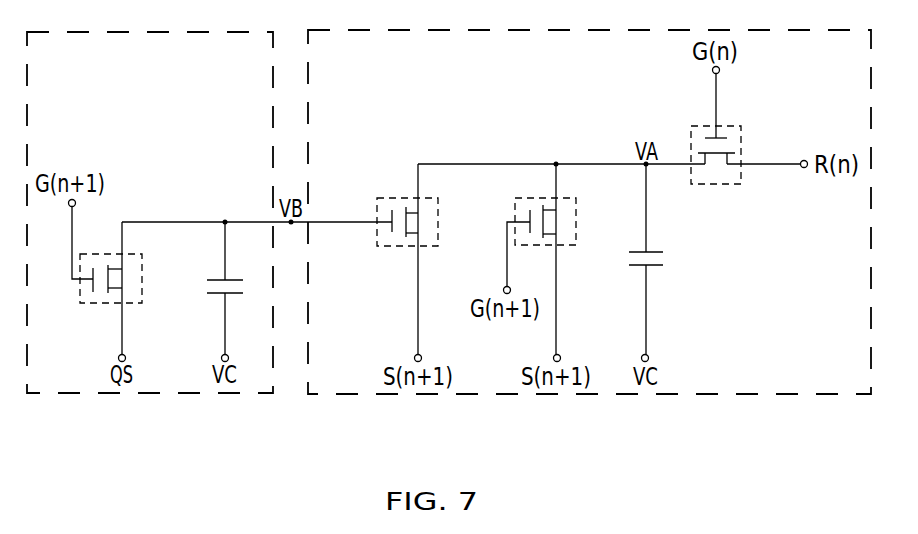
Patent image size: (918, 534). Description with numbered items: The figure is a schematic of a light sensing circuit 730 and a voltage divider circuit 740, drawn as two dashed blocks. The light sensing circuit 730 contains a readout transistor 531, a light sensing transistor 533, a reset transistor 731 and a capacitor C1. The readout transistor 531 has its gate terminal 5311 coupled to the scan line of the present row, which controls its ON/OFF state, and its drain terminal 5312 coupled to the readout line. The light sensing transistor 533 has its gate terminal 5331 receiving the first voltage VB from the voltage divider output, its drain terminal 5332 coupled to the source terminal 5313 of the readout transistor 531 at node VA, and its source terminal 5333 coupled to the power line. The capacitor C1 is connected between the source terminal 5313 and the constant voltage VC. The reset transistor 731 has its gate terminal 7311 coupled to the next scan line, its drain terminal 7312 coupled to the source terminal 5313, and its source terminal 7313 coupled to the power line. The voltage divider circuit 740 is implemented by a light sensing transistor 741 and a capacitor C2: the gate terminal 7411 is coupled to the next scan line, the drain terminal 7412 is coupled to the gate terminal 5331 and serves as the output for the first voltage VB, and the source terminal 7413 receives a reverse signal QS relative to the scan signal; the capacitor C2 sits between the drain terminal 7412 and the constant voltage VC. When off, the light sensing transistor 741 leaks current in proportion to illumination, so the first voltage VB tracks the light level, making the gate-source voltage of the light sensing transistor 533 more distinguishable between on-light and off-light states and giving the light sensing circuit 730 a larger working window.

The voltage divider circuit 740 is at (147, 396).
The light sensing transistor 741 is at (131, 260).
The gate terminal 7411 is at (92, 300).
The drain terminal 7412 is at (124, 263).
The source terminal 7413 is at (124, 296).
The light sensing circuit 730 is at (690, 396).
The reset transistor 731 is at (565, 186).
The gate terminal 7311 is at (524, 222).
The drain terminal 7312 is at (560, 210).
The source terminal 7313 is at (560, 236).
The readout transistor 531 is at (723, 158).
The gate terminal 5311 is at (722, 137).
The drain terminal 5312 is at (733, 168).
The source terminal 5313 is at (700, 182).
The light sensing transistor 533 is at (406, 210).
The gate terminal 5331 is at (385, 218).
The drain terminal 5332 is at (421, 203).
The source terminal 5333 is at (422, 237).
The capacitor C1 is at (659, 259).
The capacitor C2 is at (238, 288).